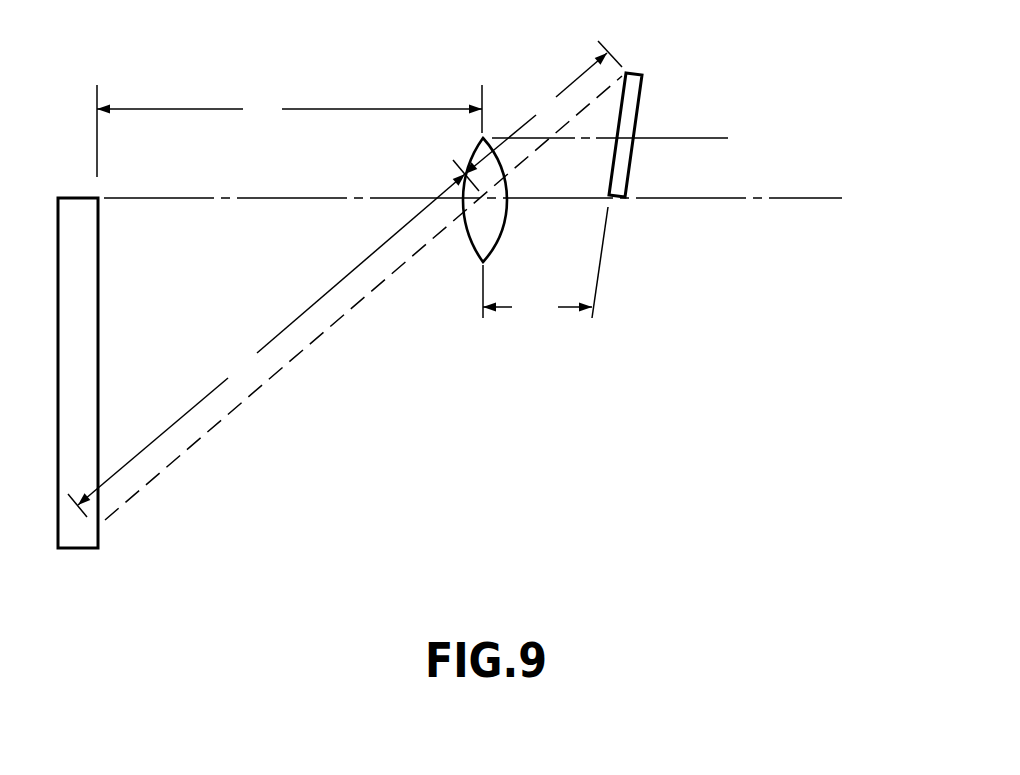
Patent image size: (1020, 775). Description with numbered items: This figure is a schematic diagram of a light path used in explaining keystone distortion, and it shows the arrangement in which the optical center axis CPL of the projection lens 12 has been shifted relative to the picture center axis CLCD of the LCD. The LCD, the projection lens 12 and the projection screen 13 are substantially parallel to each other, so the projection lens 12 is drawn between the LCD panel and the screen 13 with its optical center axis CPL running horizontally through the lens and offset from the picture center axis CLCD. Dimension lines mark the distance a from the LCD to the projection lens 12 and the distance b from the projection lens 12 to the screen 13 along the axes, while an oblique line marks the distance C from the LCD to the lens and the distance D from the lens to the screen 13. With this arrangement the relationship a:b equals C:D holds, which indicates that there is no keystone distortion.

The projection lens 12 is at (507, 220).
The projection screen 13 is at (80, 549).
The distance a is at (289, 131).
The distance b is at (545, 264).
The distance c C is at (273, 338).
The distance d D is at (543, 107).
The optical center axis CPL is at (495, 198).
The picture center axis CLCD is at (642, 138).